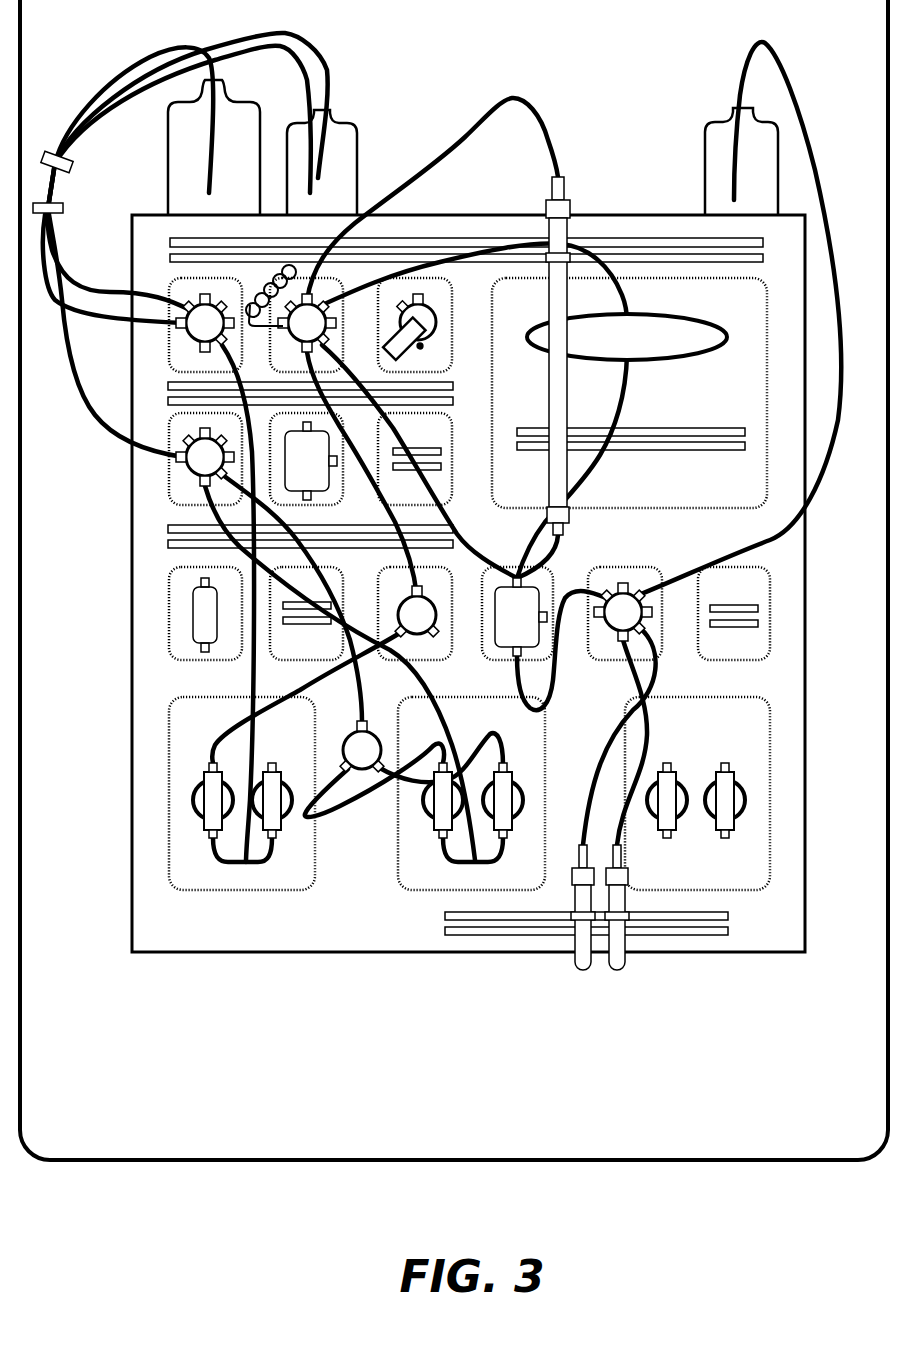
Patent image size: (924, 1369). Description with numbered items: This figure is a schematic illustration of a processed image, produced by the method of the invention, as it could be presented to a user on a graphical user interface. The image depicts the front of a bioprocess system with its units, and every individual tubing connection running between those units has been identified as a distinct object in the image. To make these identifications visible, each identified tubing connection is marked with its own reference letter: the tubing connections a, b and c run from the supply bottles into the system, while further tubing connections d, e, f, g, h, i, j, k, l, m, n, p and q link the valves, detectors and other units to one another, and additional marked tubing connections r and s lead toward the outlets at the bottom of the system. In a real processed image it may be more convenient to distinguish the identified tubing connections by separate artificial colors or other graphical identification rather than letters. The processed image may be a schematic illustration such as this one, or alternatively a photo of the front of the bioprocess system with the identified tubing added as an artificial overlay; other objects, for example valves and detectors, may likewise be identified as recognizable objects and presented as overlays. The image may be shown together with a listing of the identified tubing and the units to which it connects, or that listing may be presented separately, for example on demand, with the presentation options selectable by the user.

The identified tubing connection a is at (121, 179).
The identified tubing connection b is at (188, 245).
The identified tubing connection c is at (179, 178).
The identified tubing connection d is at (238, 603).
The identified tubing connection e is at (299, 697).
The identified tubing connection f is at (354, 742).
The identified tubing connection g is at (432, 199).
The identified tubing connection h is at (473, 410).
The identified tubing connection i is at (362, 474).
The identified tubing connection j is at (419, 461).
The identified tubing connection k is at (340, 673).
The identified tubing connection l is at (291, 597).
The identified tubing connection m is at (374, 785).
The identified tubing connection n is at (440, 759).
The identified tubing connection p is at (561, 650).
The identified tubing connection q is at (741, 318).
The tube r is at (611, 736).
The tube s is at (636, 742).